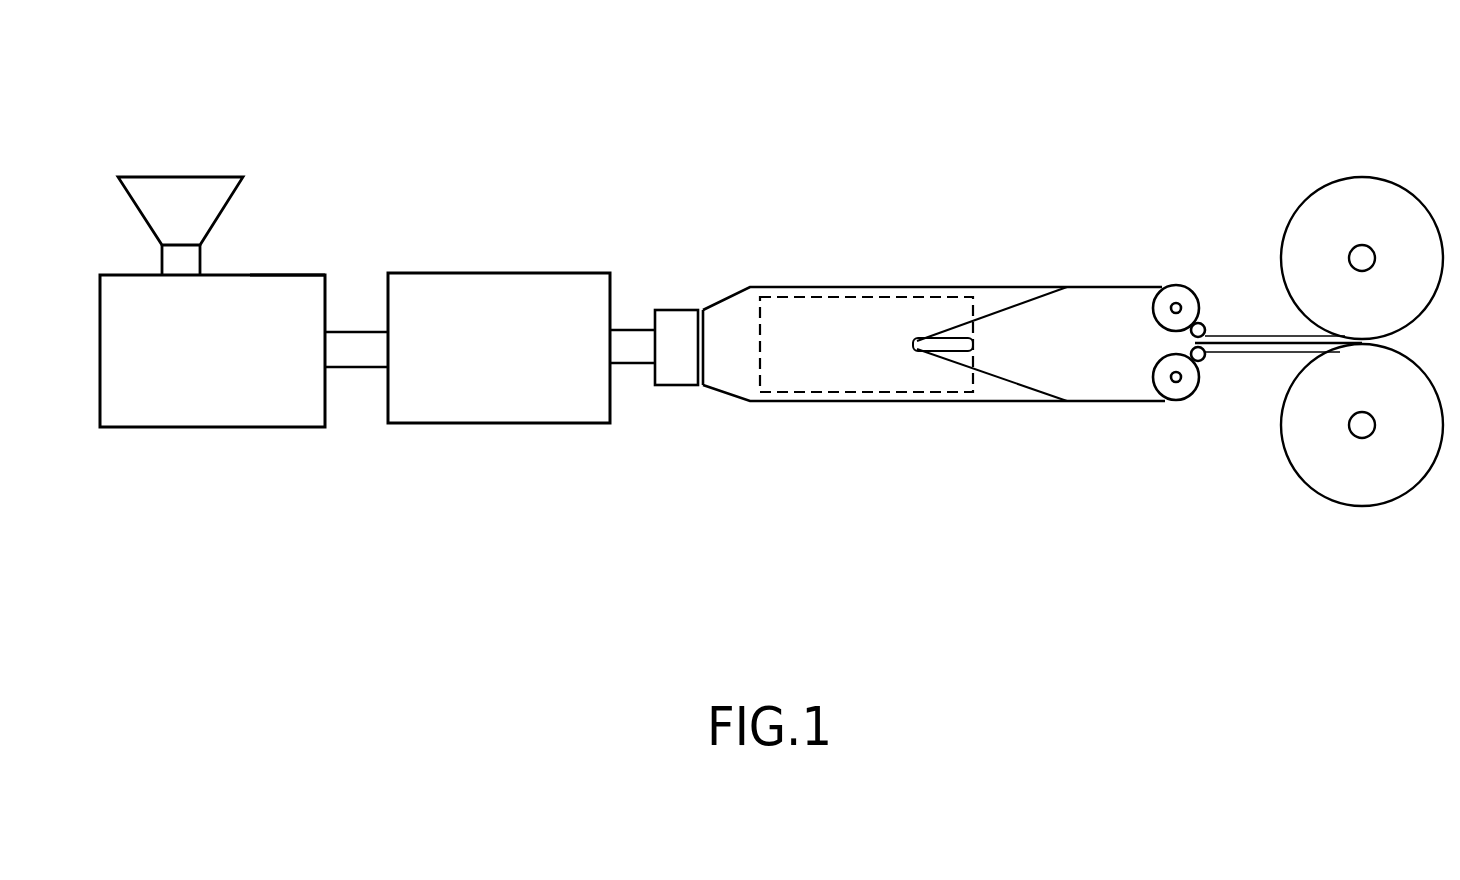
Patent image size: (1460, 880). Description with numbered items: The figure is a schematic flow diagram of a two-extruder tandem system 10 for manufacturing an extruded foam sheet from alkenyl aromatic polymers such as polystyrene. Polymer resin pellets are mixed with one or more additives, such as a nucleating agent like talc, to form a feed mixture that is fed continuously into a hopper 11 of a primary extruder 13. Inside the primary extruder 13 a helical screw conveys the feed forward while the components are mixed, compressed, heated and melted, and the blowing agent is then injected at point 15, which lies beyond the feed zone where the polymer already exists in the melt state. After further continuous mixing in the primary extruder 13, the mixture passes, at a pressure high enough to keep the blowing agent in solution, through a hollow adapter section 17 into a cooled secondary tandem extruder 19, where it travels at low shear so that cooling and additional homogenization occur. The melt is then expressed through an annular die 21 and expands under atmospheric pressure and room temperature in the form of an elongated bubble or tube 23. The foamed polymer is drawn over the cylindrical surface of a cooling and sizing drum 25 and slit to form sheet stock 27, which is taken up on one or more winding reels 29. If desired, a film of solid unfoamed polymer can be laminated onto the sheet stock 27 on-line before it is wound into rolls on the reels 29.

The two-extruder tandem system 10 is at (633, 530).
The hopper 11 is at (190, 177).
The primary extruder 13 is at (210, 428).
The blowing agent injection point 15 is at (288, 273).
The hollow adapter section 17 is at (357, 331).
The secondary tandem extruder 19 is at (507, 424).
The annular die 21 is at (684, 309).
The elongated bubble or tube 23 is at (870, 287).
The cooling and sizing drum 25 is at (830, 392).
The sheet stock 27 is at (1121, 287).
The winding reels 29 is at (1255, 378).